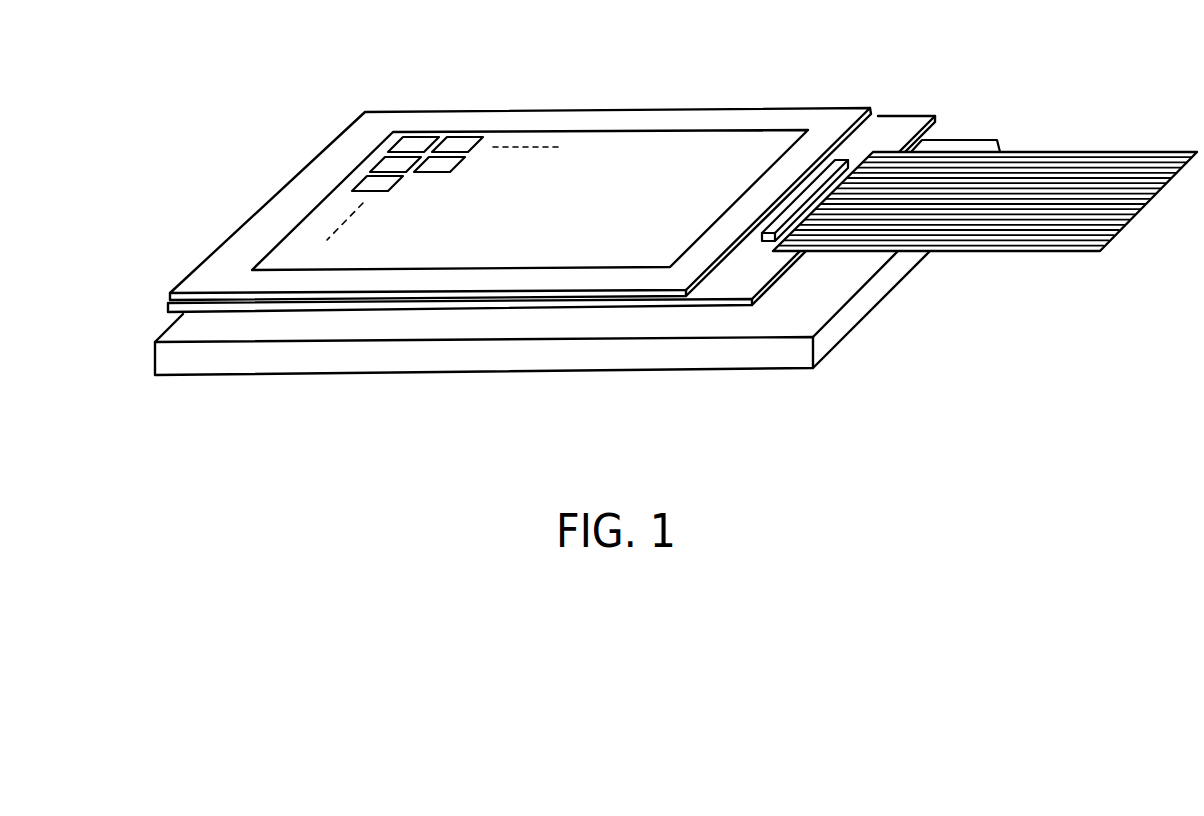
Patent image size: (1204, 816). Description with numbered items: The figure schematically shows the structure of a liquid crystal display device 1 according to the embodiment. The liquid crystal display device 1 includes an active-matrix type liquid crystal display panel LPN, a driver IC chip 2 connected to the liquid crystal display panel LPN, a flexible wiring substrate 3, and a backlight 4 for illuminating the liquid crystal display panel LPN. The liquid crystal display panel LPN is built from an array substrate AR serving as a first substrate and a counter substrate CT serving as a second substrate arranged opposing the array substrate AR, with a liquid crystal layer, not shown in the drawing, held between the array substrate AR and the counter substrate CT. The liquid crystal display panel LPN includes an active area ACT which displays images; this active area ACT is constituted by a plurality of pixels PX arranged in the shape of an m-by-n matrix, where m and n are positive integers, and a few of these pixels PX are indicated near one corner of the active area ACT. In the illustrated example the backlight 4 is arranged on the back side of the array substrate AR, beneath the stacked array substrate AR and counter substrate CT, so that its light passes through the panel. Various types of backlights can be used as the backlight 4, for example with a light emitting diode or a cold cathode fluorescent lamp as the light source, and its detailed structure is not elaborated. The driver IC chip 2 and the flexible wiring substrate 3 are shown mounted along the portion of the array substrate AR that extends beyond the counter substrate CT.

The liquid crystal display device 1 is at (956, 78).
The driver IC chip 2 is at (838, 163).
The flexible wiring substrate 3 is at (1133, 150).
The backlight 4 is at (179, 363).
The liquid crystal display panel LPN is at (723, 312).
The array substrate AR is at (613, 304).
The counter substrate CT is at (555, 294).
The active area ACT is at (462, 266).
The pixel PX is at (422, 139).